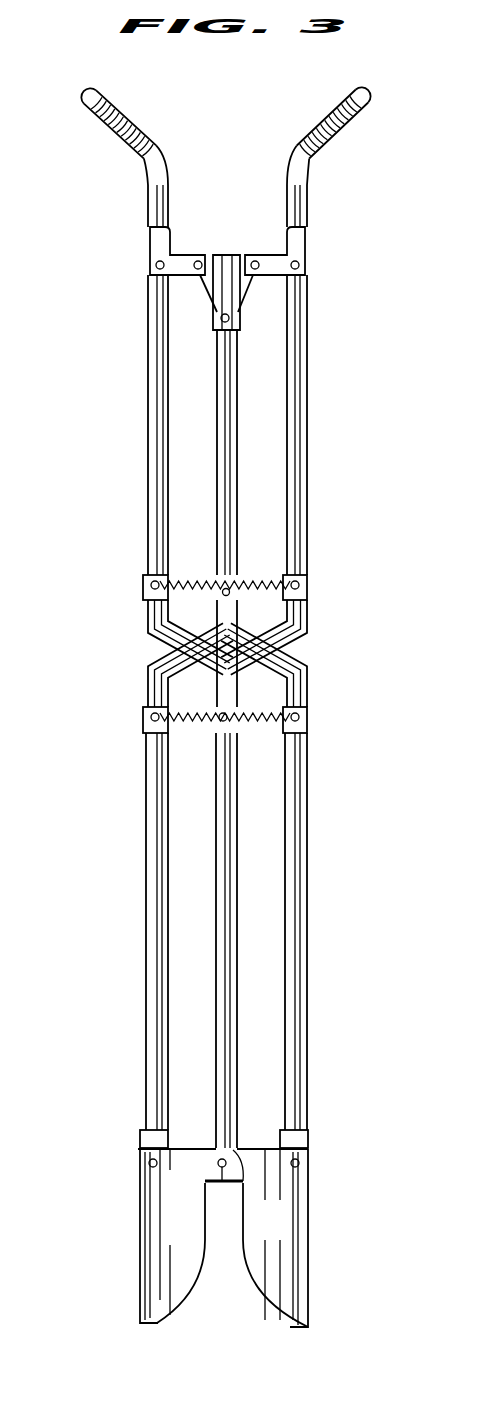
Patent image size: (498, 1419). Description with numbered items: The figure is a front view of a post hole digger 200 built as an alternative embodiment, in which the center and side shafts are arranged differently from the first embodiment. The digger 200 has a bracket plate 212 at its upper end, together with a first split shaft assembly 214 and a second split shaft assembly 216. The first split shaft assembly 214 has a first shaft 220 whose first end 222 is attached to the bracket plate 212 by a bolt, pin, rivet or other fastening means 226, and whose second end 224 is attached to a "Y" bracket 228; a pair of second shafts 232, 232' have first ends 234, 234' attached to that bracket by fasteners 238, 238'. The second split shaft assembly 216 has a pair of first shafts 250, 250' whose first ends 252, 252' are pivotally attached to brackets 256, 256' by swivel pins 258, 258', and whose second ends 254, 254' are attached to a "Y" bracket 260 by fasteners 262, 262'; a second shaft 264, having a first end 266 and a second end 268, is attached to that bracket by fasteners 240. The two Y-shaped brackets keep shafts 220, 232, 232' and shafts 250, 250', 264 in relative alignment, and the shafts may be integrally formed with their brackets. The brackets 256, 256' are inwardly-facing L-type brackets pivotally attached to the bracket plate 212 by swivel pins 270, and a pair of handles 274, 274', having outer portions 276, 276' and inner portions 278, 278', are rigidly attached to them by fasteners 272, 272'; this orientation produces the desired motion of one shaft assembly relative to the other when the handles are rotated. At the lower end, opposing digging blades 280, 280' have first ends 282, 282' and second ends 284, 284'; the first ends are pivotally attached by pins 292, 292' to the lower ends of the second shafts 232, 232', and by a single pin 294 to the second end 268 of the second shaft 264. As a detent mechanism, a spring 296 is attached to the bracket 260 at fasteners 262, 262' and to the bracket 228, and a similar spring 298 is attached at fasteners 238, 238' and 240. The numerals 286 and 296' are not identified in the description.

The post hole digger 200 is at (425, 62).
The bracket plate 212 is at (223, 255).
The first split shaft assembly 214 is at (217, 458).
The second split shaft assembly 216 is at (306, 425).
The first shaft 220 is at (217, 422).
The first end 222 is at (237, 338).
The second end 224 is at (217, 575).
The fastening means 226 is at (221, 320).
The "Y" bracket 228 is at (305, 657).
The second shaft 232 is at (119, 931).
The second shaft 232' is at (337, 931).
The first end 234 is at (119, 745).
The first end 234' is at (338, 731).
The fastener 238 is at (112, 705).
The fastener 238' is at (340, 717).
The fasteners 240 is at (203, 730).
The first shaft 250 is at (127, 425).
The first shaft 250' is at (338, 425).
The first end 252 is at (152, 309).
The first end 252' is at (312, 300).
The second end 254 is at (120, 569).
The second end 254' is at (338, 564).
The bracket 256 is at (142, 251).
The bracket 256' is at (317, 251).
The swivel pin 258 is at (123, 273).
The swivel pin 258' is at (339, 273).
The "Y" bracket 260 is at (148, 608).
The fastener 262 is at (113, 590).
The fastener 262' is at (340, 585).
The second shaft 264 is at (233, 915).
The first end 266 is at (233, 778).
The second end 268 is at (233, 1120).
The swivel pin 270 is at (203, 250).
The fastener 272 is at (127, 197).
The fastener 272' is at (340, 206).
The handle 274 is at (135, 120).
The handle 274' is at (325, 120).
The outer portion 276 is at (89, 117).
The outer portion 276' is at (385, 115).
The inner portion 278 is at (178, 149).
The inner portion 278' is at (280, 151).
The digging blade 280 is at (121, 1236).
The digging blade 280' is at (329, 1238).
The first end 282 is at (177, 1146).
The first end 282' is at (272, 1162).
The second end 284 is at (192, 1264).
The second end 284' is at (283, 1270).
The left bottom collar 286 is at (143, 1135).
The pin 292 is at (115, 1173).
The pin 292' is at (342, 1169).
The single pin 294 is at (220, 1187).
The spring 296 is at (299, 637).
The right bottom collar 296' is at (330, 1134).
The spring 298 is at (200, 710).